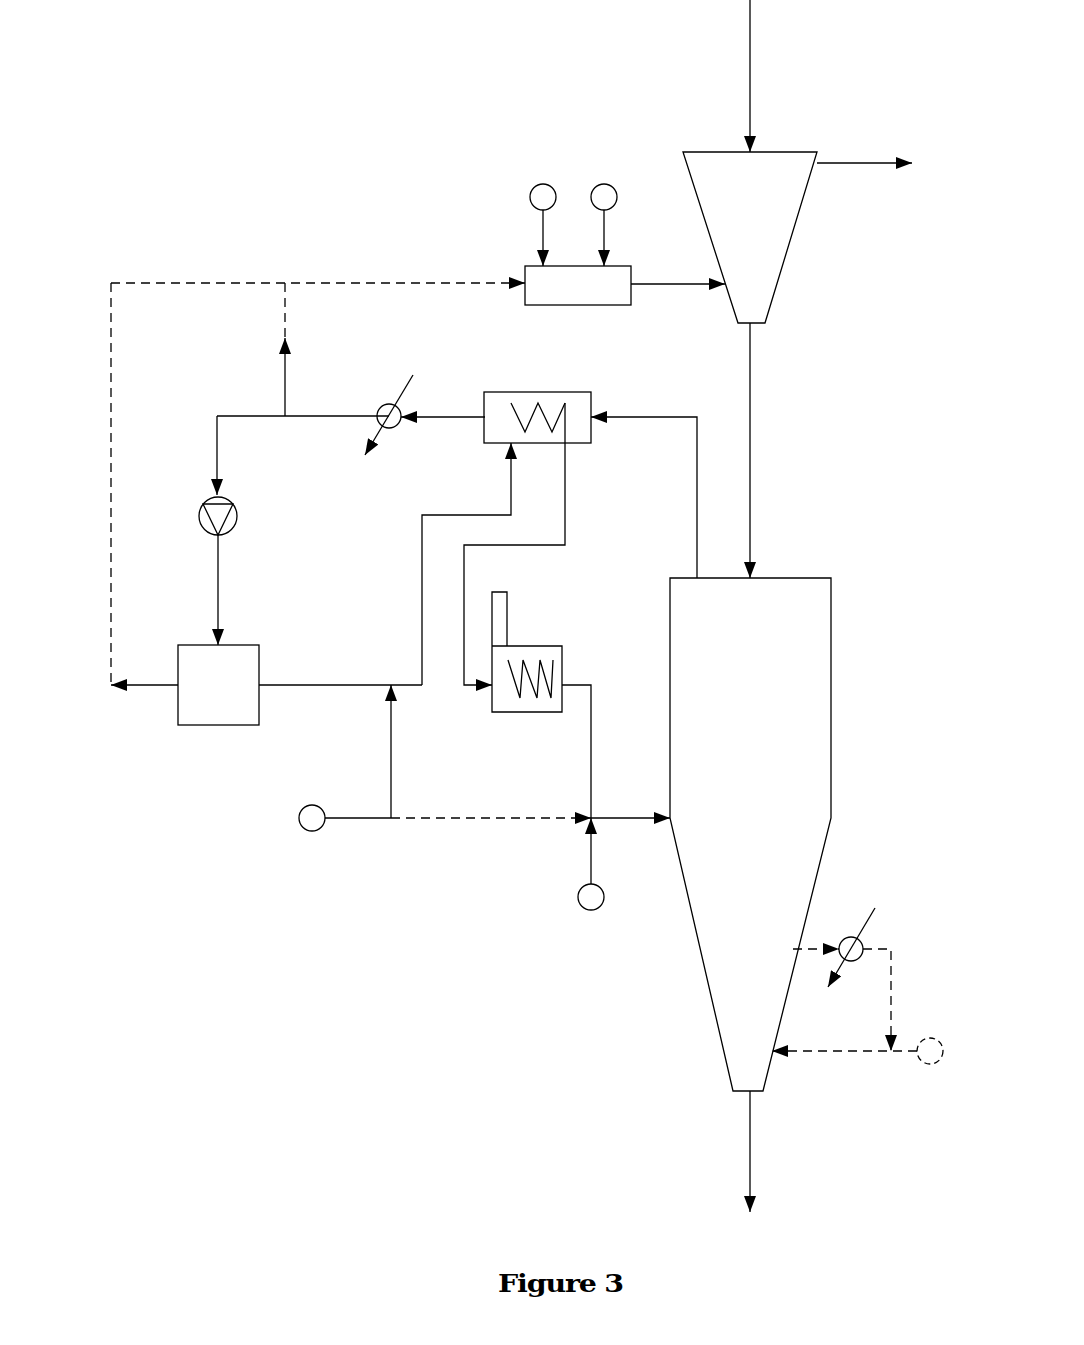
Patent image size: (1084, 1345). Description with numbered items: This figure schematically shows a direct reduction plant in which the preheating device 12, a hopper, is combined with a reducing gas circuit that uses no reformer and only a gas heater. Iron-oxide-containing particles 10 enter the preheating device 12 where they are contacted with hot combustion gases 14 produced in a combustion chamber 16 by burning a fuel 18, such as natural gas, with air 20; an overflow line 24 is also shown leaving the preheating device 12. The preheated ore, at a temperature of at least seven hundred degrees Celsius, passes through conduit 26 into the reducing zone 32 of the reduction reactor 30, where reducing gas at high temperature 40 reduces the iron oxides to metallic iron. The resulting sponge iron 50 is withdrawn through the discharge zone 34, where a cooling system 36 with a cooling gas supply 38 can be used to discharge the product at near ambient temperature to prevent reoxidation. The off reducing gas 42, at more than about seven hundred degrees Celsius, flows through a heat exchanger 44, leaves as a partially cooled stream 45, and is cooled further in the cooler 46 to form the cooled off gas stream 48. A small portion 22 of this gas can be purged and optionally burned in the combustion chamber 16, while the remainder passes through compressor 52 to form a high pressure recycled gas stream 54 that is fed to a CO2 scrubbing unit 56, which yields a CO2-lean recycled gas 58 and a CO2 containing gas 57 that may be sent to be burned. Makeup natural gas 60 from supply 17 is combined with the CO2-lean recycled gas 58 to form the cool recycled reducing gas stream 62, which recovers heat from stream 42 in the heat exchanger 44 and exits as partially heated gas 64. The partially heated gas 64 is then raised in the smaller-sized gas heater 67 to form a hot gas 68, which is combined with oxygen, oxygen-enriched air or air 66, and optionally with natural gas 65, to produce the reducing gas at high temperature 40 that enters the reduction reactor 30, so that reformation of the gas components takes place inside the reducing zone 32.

The iron-oxide-containing particles 10 is at (750, 47).
The preheating device 12 is at (702, 150).
The hot combustion gases 14 is at (660, 283).
The combustion chamber 16 is at (555, 305).
The natural gas supply 17 is at (312, 831).
The fuel 18 is at (592, 192).
The air 20 is at (530, 196).
The purged portion of cooled off gas 22 is at (284, 400).
The overflow outlet 24 is at (873, 162).
The conduit 26 is at (750, 452).
The reduction reactor 30 is at (831, 600).
The reducing zone 32 is at (776, 724).
The discharge zone 34 is at (776, 972).
The cooling system 36 is at (891, 952).
The cooling gas supply 38 is at (930, 1064).
The reducing gas at high temperature 40 is at (642, 818).
The off reducing gas 42 is at (698, 416).
The heat exchanger 44 is at (496, 392).
The partially cooled off gas stream 45 is at (430, 417).
The cooler 46 is at (390, 404).
The cooled off gas stream 48 is at (322, 416).
The sponge iron 50 is at (750, 1143).
The compressor 52 is at (199, 517).
The high pressure recycled gas stream 54 is at (218, 590).
The CO2 scrubbing unit 56 is at (260, 648).
The CO2 containing gas 57 is at (150, 690).
The CO2-lean recycled gas 58 is at (367, 685).
The makeup natural gas 60 is at (391, 750).
The cool recycled reducing gas stream 62 is at (422, 530).
The partially heated gas 64 is at (565, 470).
The natural gas 65 is at (500, 818).
The oxygen, oxygen-enriched air or air 66 is at (578, 898).
The gas heater 67 is at (525, 646).
The hot gas 68 is at (596, 684).